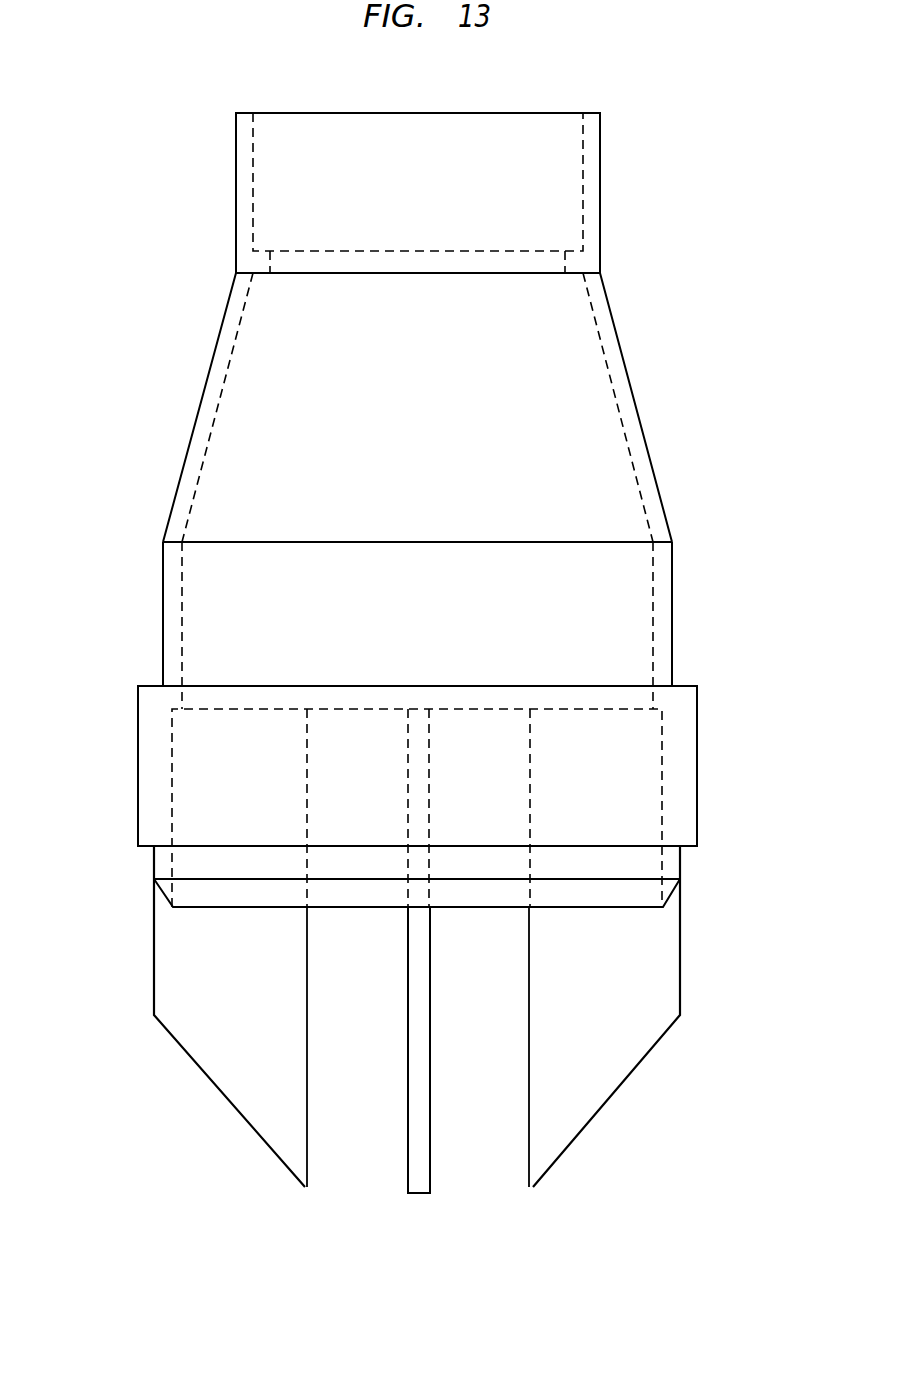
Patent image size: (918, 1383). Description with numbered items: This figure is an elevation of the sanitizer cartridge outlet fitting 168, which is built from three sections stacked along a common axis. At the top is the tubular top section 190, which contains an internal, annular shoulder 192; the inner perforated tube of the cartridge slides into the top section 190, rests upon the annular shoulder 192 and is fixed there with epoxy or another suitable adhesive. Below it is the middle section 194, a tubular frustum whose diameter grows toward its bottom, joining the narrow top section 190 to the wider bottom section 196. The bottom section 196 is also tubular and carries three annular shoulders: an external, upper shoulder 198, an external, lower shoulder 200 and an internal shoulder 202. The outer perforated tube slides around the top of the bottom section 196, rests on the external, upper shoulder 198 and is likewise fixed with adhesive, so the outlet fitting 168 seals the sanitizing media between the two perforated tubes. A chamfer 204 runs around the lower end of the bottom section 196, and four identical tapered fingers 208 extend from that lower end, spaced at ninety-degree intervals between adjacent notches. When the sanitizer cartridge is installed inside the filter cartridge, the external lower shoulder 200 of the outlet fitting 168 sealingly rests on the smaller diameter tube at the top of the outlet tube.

The outlet fitting 168 is at (172, 382).
The top section 190 is at (600, 151).
The internal annular shoulder 192 is at (573, 240).
The middle section 194 is at (637, 414).
The bottom section 196 is at (673, 572).
The external upper shoulder 198 is at (680, 686).
The external lower shoulder 200 is at (685, 847).
The internal shoulder 202 is at (662, 728).
The chamfer 204 is at (155, 890).
The tapered fingers 208 is at (533, 1187).